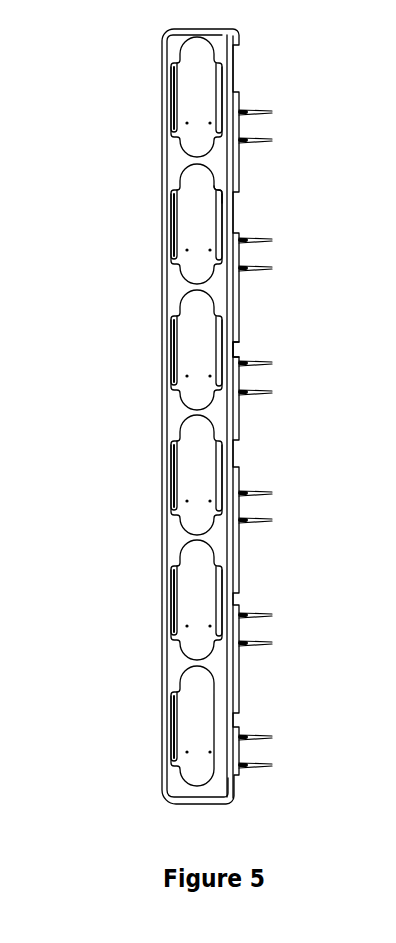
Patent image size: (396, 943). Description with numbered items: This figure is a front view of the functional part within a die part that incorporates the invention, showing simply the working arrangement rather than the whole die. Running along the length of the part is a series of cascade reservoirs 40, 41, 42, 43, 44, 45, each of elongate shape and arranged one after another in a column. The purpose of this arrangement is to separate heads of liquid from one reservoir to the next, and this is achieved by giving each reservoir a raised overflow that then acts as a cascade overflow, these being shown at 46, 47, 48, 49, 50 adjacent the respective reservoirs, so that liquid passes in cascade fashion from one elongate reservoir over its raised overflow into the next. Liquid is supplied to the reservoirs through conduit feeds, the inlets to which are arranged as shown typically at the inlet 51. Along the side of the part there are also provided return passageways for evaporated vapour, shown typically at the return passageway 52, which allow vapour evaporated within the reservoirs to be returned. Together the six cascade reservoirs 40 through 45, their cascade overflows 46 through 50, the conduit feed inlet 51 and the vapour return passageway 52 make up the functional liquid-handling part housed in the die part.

The cascade reservoir 40 is at (192, 138).
The cascade reservoir 41 is at (183, 227).
The cascade reservoir 42 is at (200, 360).
The cascade reservoir 43 is at (193, 467).
The cascade reservoir 44 is at (210, 603).
The cascade reservoir 45 is at (210, 712).
The cascade overflow 46 is at (178, 65).
The cascade overflow 47 is at (217, 196).
The cascade overflow 48 is at (170, 321).
The cascade overflow 49 is at (222, 446).
The cascade overflow 50 is at (187, 595).
The inlet to conduit feed 51 is at (209, 267).
The return passageway for evaporated vapour 52 is at (233, 355).